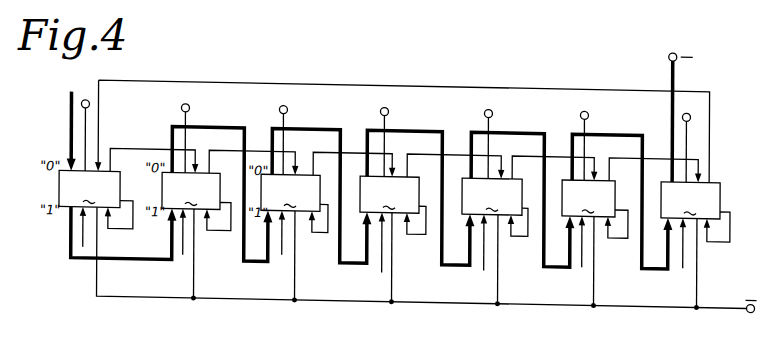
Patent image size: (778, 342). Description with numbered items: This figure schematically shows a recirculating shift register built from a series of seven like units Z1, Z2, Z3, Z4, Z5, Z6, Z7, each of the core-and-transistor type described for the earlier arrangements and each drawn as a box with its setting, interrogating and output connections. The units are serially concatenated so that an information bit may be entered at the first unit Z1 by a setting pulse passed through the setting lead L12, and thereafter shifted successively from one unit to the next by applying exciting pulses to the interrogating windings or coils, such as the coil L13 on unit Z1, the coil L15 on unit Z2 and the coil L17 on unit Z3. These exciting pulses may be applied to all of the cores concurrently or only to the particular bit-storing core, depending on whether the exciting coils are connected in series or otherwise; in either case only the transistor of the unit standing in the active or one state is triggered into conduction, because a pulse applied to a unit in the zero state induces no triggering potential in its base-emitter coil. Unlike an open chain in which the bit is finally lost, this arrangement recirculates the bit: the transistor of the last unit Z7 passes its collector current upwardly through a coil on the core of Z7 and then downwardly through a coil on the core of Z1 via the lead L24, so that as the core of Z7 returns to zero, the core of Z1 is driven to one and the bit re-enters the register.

The setting lead L12 is at (71, 138).
The interrogating coil L13 is at (83, 236).
The interrogating coil L15 is at (183, 253).
The interrogating coil L17 is at (282, 252).
The lead L24 is at (707, 233).
The unit Z1 is at (89, 188).
The unit Z2 is at (191, 190).
The unit Z3 is at (290, 192).
The unit Z4 is at (389, 194).
The unit Z5 is at (492, 196).
The unit Z6 is at (588, 198).
The unit Z7 is at (690, 200).